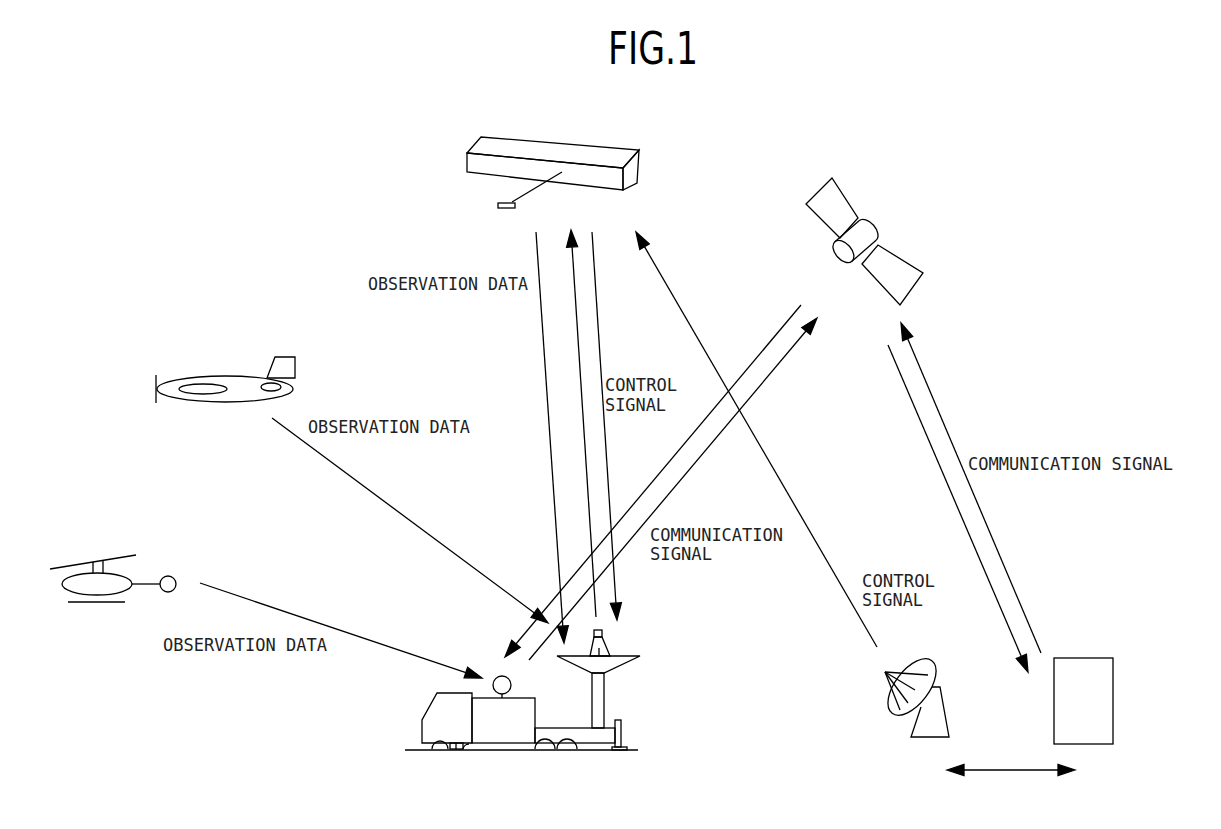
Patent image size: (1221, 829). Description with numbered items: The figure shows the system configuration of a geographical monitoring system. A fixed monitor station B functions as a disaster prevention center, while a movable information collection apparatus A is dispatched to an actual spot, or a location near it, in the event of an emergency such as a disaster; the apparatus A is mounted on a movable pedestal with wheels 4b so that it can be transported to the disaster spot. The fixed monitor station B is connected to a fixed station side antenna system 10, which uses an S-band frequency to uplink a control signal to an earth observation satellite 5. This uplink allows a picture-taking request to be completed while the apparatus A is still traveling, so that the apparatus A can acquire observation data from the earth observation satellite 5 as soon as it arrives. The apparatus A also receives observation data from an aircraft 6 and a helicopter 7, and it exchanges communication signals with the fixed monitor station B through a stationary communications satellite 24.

The earth observation satellite 5 is at (593, 153).
The stationary communications satellite 24 is at (903, 265).
The aircraft 6 is at (238, 377).
The helicopter 7 is at (108, 580).
The wheels 4b is at (443, 753).
The fixed station side antenna system 10 is at (899, 710).
The movable information collection apparatus A is at (626, 704).
The fixed monitor station B is at (1124, 719).